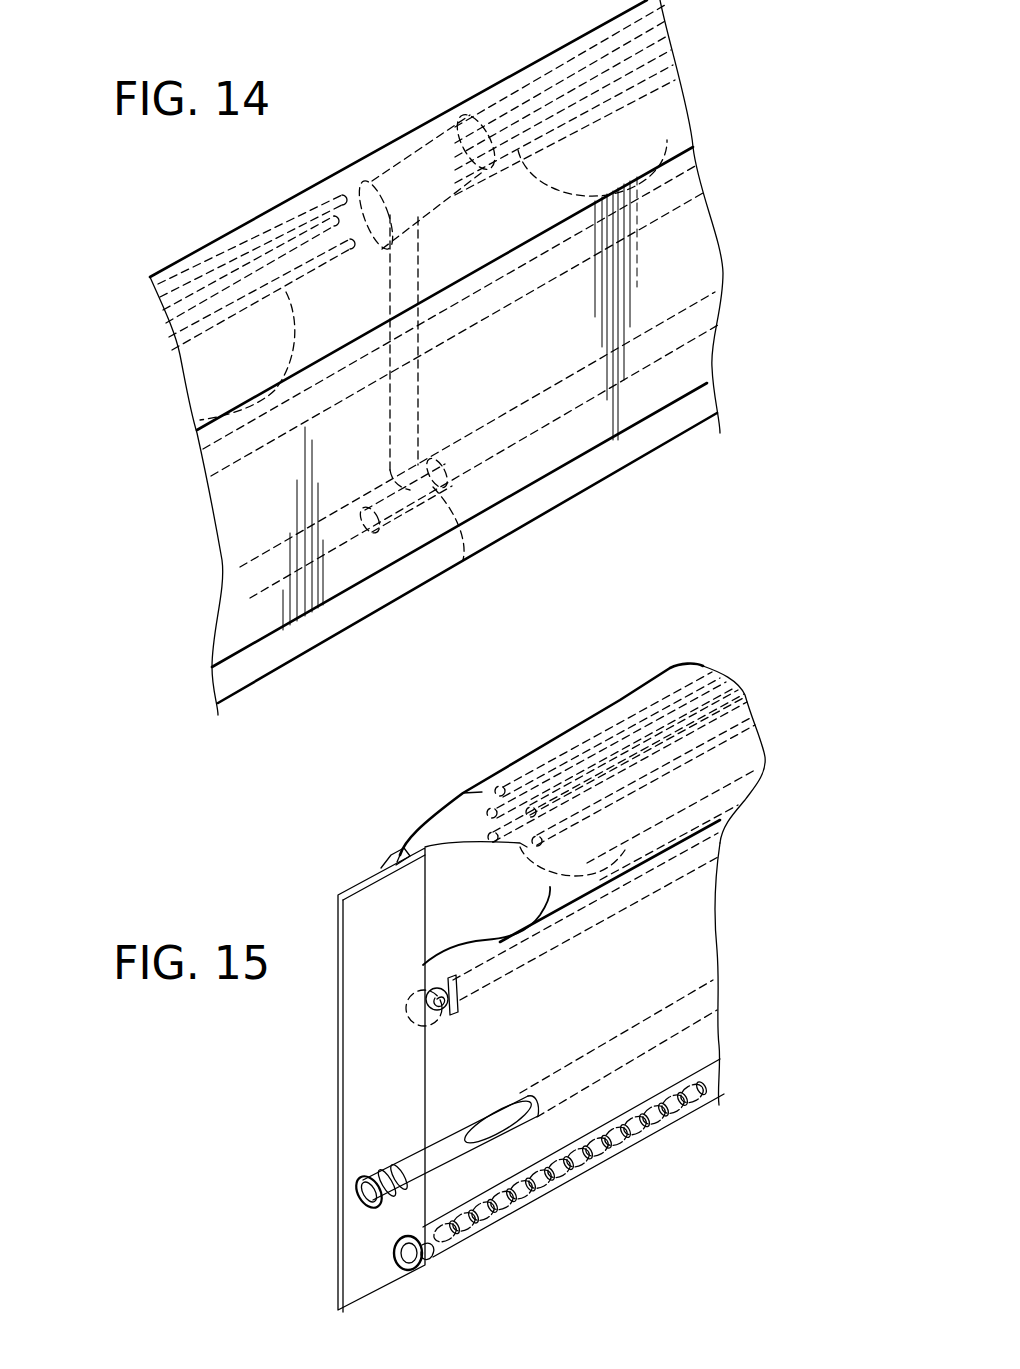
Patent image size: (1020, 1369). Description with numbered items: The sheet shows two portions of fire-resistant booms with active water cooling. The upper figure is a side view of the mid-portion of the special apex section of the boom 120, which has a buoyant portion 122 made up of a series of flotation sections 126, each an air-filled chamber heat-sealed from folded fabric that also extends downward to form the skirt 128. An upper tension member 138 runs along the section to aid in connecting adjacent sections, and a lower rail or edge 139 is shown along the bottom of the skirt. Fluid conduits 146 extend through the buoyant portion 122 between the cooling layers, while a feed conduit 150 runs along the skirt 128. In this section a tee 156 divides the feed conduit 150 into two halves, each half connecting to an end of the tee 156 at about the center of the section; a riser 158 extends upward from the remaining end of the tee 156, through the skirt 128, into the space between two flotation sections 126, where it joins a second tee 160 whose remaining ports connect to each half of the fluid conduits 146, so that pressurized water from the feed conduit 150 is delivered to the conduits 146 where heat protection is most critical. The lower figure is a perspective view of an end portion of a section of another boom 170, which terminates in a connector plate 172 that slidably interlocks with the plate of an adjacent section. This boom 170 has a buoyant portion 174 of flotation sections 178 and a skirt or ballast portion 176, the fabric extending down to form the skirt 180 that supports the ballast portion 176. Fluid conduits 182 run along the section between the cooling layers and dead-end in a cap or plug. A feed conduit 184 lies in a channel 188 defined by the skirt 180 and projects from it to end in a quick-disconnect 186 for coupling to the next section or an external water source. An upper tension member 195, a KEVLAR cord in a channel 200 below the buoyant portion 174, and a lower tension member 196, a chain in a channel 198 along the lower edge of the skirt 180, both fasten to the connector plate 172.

In FIG. 14, the boom 120 is at (777, 68).
In FIG. 14, the buoyant portion 122 is at (143, 346).
In FIG. 14, the flotation section 126 is at (688, 103).
In FIG. 14, the skirt 128 is at (710, 263).
In FIG. 14, the upper tension member 138 is at (698, 169).
In FIG. 14, the bottom rail 139 is at (637, 450).
In FIG. 14, the fluid conduit 146 is at (665, 15).
In FIG. 14, the feed conduit 150 is at (707, 313).
In FIG. 14, the tee 156 is at (463, 560).
In FIG. 14, the riser 158 is at (420, 405).
In FIG. 14, the second tee 160 is at (398, 175).
In FIG. 15, the boom 170 is at (281, 1172).
In FIG. 15, the connector plate 172 is at (347, 1238).
In FIG. 15, the buoyant portion 174 is at (782, 732).
In FIG. 15, the ballast portion 176 is at (749, 936).
In FIG. 15, the flotation section 178 is at (742, 773).
In FIG. 15, the skirt 180 is at (717, 1040).
In FIG. 15, the fluid conduit 182 is at (700, 668).
In FIG. 15, the feed conduit 184 is at (430, 1160).
In FIG. 15, the quick-disconnect 186 is at (357, 1192).
In FIG. 15, the channel 188 is at (495, 1105).
In FIG. 15, the upper tension member 195 is at (440, 990).
In FIG. 15, the lower tension member 196 is at (428, 1255).
In FIG. 15, the channel 198 is at (700, 1108).
In FIG. 15, the channel 200 is at (455, 1000).